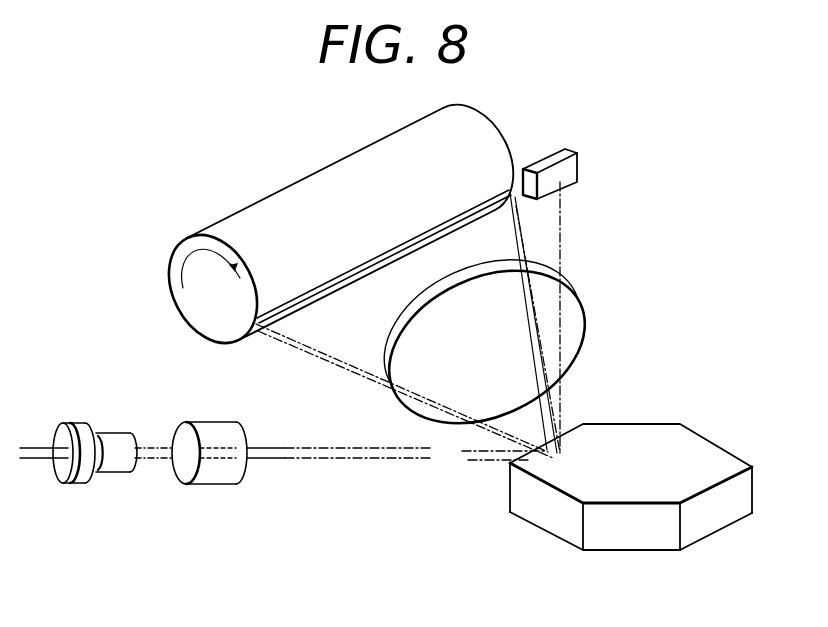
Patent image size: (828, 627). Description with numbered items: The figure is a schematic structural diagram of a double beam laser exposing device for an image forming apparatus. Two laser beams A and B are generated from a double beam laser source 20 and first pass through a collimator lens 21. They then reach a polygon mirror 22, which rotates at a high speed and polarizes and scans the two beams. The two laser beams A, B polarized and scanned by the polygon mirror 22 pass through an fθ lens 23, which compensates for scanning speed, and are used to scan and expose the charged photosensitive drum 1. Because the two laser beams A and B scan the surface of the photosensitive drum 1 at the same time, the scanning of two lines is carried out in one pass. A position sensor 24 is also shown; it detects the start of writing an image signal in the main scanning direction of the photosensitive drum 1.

The photosensitive drum 1 is at (318, 171).
The double beam laser source 20 is at (83, 478).
The collimator lens 21 is at (218, 478).
The polygon mirror 22 is at (632, 541).
The fθ lens 23 is at (577, 322).
The position sensor 24 is at (545, 150).
The laser beam A is at (148, 441).
The laser beam B is at (148, 464).